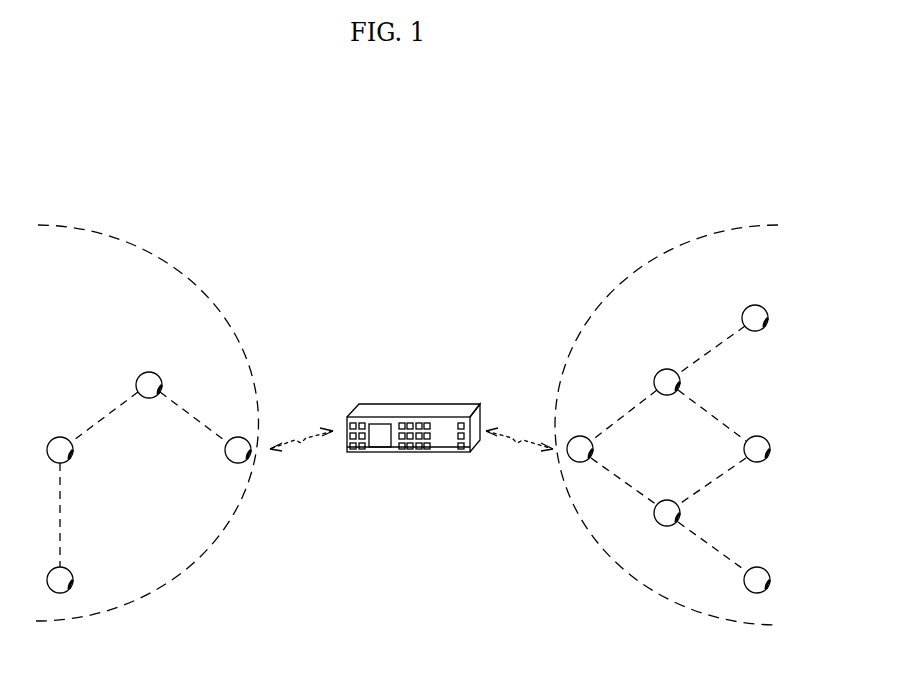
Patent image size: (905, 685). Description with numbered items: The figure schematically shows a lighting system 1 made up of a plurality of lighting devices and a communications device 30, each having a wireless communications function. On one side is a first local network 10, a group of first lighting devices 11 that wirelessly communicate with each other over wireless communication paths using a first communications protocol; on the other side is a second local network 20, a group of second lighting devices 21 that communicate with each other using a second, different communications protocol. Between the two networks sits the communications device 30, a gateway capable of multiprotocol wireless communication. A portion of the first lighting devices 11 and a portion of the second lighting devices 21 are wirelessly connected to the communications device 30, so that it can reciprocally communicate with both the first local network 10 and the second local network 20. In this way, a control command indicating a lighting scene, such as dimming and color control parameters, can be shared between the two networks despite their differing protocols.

The lighting system 1 is at (630, 166).
The first local network 10 is at (168, 262).
The first lighting device 11 is at (225, 452).
The second local network 20 is at (648, 262).
The second lighting device 21 is at (580, 436).
The communications device 30 is at (448, 403).